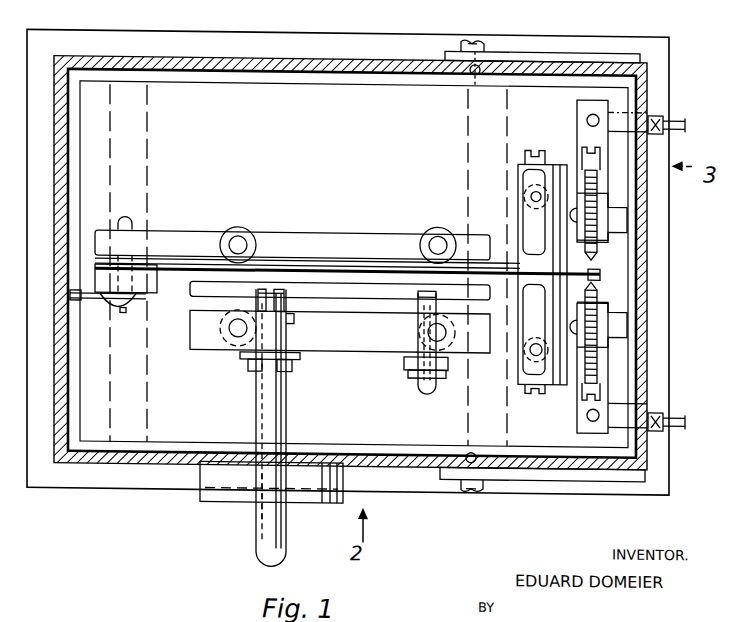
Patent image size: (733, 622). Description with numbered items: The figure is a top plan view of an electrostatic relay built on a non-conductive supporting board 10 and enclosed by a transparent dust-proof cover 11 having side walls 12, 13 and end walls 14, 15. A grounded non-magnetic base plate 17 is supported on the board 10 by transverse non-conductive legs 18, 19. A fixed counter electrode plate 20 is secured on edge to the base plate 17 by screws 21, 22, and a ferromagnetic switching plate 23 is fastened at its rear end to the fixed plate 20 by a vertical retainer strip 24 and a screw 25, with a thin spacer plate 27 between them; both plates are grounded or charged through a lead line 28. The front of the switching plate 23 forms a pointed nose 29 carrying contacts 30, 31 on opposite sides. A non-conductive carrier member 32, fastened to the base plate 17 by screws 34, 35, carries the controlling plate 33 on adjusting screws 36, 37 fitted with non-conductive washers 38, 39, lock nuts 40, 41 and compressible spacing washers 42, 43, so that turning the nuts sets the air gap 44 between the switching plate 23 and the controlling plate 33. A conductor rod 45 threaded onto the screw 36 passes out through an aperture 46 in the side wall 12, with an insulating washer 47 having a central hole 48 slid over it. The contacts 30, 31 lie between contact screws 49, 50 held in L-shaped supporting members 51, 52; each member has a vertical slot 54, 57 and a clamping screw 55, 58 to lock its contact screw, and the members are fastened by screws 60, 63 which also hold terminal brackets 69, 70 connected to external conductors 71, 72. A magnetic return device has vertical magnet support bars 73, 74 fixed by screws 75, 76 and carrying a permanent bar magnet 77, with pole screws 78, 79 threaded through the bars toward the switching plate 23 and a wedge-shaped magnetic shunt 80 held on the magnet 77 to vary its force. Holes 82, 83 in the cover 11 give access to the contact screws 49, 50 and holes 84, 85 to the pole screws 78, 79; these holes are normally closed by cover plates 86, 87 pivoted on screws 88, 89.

The supporting board 10 is at (286, 32).
The dust-proof cover 11 is at (262, 56).
The side wall 12 is at (378, 466).
The side wall 13 is at (341, 54).
The end wall 14 is at (56, 270).
The end wall 15 is at (641, 268).
The base plate 17 is at (88, 159).
The non-conductive leg 18 is at (149, 162).
The non-conductive leg 19 is at (466, 186).
The fixed counter electrode plate 20 is at (196, 231).
The screw 21 is at (236, 222).
The screw 22 is at (432, 228).
The switching plate 23 is at (303, 262).
The retainer strip 24 is at (157, 272).
The screw 25 is at (143, 298).
The spacer plate 27 is at (138, 260).
The lead line 28 is at (76, 298).
The pointed nose 29 is at (603, 281).
The contact 30 is at (600, 264).
The contact 31 is at (601, 296).
The carrier member 32 is at (326, 349).
The controlling plate 33 is at (333, 294).
The screw 34 is at (221, 322).
The screw 35 is at (456, 322).
The adjusting screw 36 is at (284, 330).
The adjusting screw 37 is at (422, 383).
The non-conductive washer 38 is at (240, 352).
The non-conductive washer 39 is at (404, 362).
The lock nut 40 is at (250, 366).
The lock nut 41 is at (416, 374).
The spacing washer 42 is at (284, 305).
The spacing washer 43 is at (407, 297).
The air gap 44 is at (343, 272).
The conductor rod 45 is at (290, 424).
The aperture 46 is at (343, 483).
The insulating washer 47 is at (242, 494).
The central hole 48 is at (257, 515).
The contact screw 49 is at (593, 193).
The contact screw 50 is at (602, 392).
The L-shaped supporting member 51 is at (577, 100).
The L-shaped supporting member 52 is at (577, 404).
The vertical slot 54 is at (602, 196).
The clamping screw 55 is at (612, 222).
The vertical slot 57 is at (602, 312).
The clamping screw 58 is at (612, 340).
The screw 60 is at (586, 414).
The screw 63 is at (587, 116).
The terminal bracket 69 is at (664, 412).
The terminal bracket 70 is at (665, 114).
The conductor 71 is at (681, 423).
The conductor 72 is at (683, 124).
The magnet support bar 73 is at (520, 168).
The magnet support bar 74 is at (520, 380).
The screw 75 is at (524, 190).
The screw 76 is at (524, 360).
The permanent bar magnet 77 is at (522, 232).
The pole screw 78 is at (524, 146).
The pole screw 79 is at (510, 396).
The magnetic shunt 80 is at (559, 160).
The hole 82 is at (602, 50).
The hole 83 is at (590, 486).
The hole 84 is at (524, 56).
The hole 85 is at (528, 478).
The cover plate 86 is at (545, 52).
The cover plate 87 is at (542, 478).
The screw 88 is at (470, 36).
The screw 89 is at (474, 488).